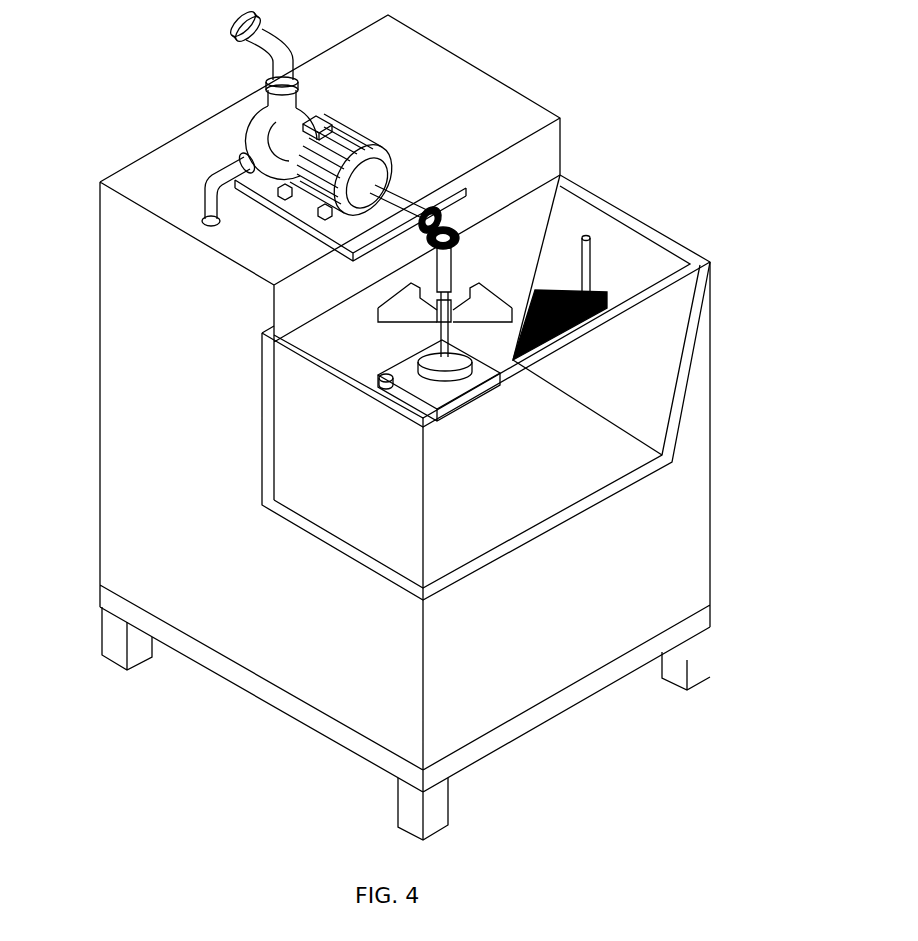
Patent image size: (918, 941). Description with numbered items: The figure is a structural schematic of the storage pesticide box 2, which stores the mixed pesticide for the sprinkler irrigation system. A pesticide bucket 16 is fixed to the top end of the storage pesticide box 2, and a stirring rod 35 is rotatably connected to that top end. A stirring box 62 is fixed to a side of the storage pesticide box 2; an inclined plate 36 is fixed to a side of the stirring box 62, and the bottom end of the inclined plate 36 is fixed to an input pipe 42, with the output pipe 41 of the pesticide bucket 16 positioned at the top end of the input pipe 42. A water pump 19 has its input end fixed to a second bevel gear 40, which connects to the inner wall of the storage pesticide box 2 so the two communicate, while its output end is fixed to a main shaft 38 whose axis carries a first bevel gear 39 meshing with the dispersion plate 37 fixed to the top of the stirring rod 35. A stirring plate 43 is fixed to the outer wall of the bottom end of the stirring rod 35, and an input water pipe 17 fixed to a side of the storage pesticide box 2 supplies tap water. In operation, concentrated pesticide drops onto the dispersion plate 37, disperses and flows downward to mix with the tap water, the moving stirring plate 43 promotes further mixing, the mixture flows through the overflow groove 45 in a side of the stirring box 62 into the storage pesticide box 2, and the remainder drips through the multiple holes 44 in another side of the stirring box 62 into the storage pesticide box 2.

The storage pesticide box 2 is at (525, 644).
The pesticide bucket 16 is at (593, 250).
The input water pipe 17 is at (380, 380).
The water pump 19 is at (250, 147).
The stirring rod 35 is at (455, 269).
The inclined plate 36 is at (610, 282).
The dispersion plate 37 is at (453, 270).
The main shaft 38 is at (432, 207).
The first bevel gear 39 is at (450, 233).
The second bevel gear 40 is at (203, 222).
The output pipe 41 is at (237, 22).
The input pipe 42 is at (503, 338).
The stirring plate 43 is at (520, 352).
The hole 44 is at (423, 427).
The overflow groove 45 is at (345, 286).
The stirring box 62 is at (530, 455).